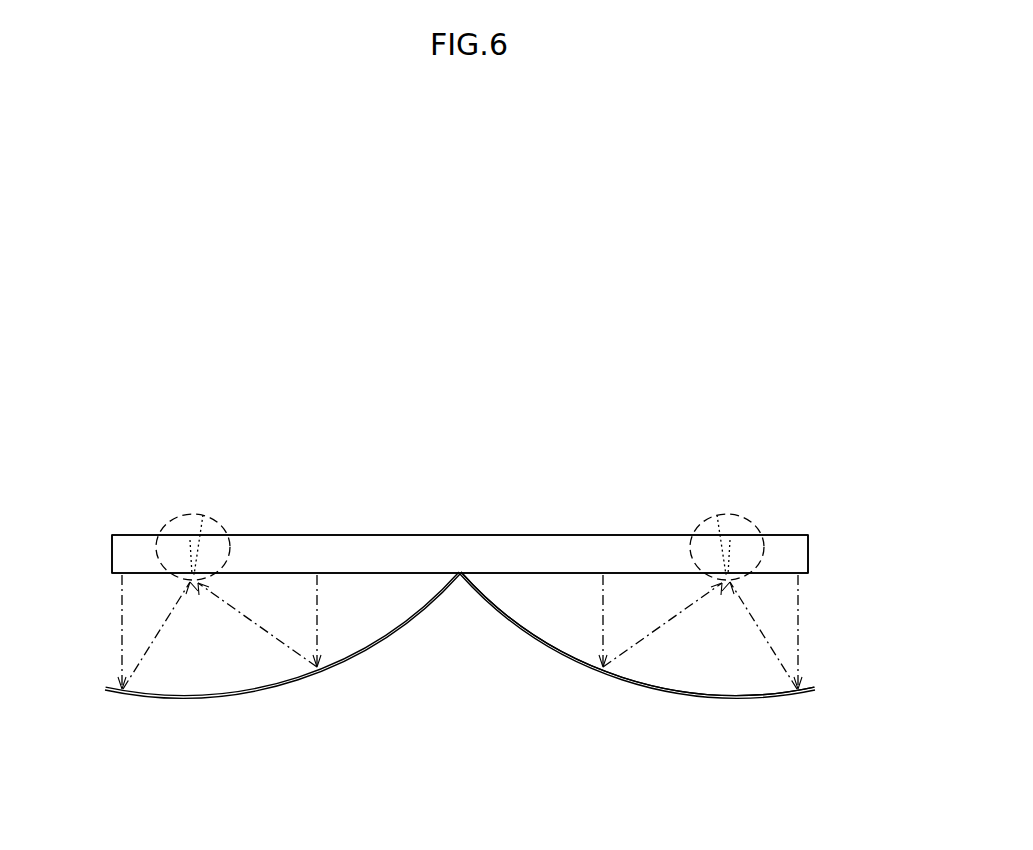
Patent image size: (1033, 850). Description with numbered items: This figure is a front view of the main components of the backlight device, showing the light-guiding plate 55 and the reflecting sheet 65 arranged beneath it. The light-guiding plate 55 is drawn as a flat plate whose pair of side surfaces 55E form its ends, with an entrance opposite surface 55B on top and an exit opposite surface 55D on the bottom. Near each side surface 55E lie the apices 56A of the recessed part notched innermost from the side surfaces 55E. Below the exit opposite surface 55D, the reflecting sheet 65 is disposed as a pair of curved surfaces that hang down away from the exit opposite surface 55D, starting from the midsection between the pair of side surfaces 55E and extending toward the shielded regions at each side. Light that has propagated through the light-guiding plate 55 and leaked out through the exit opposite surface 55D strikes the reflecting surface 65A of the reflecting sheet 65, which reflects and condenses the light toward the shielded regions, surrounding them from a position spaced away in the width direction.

The light-guiding plate 55 is at (563, 531).
The entrance opposite surface 55B is at (377, 551).
The exit opposite surface 55D is at (770, 576).
The side surfaces 55E is at (112, 552).
The apices of the recessed part 56A is at (203, 515).
The reflecting sheet 65 is at (385, 643).
The reflecting surface 65A is at (523, 630).